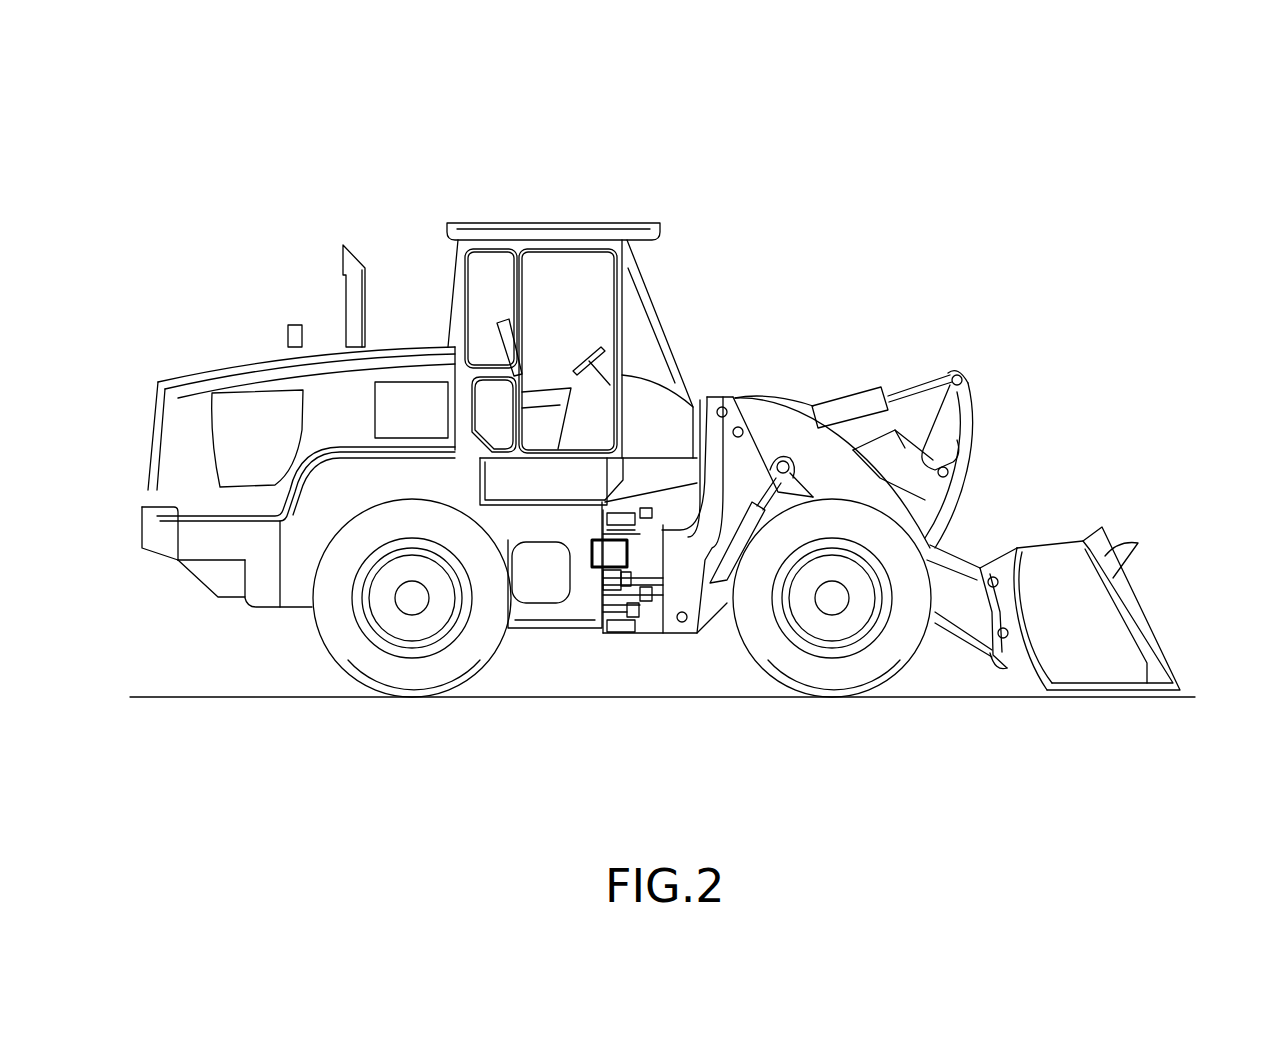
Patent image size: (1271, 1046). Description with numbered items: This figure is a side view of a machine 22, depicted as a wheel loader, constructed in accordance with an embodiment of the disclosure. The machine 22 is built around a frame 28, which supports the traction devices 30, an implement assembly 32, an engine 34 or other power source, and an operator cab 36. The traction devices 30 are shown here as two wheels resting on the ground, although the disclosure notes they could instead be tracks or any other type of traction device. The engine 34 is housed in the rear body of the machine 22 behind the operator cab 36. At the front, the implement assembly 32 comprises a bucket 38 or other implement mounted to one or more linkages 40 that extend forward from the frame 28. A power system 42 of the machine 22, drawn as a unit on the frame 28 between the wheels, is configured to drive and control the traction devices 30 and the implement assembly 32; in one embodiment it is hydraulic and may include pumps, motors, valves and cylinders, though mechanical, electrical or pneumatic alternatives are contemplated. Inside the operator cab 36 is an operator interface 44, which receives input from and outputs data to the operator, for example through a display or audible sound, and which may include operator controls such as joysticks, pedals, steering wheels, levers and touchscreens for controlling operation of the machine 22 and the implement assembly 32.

The machine 22 is at (884, 220).
The frame 28 is at (565, 623).
The traction devices 30 is at (432, 668).
The implement assembly 32 is at (1011, 414).
The engine 34 is at (247, 447).
The operator cab 36 is at (486, 243).
The bucket 38 is at (1108, 647).
The linkages 40 is at (797, 442).
The power system 42 is at (622, 564).
The operator interface 44 is at (577, 349).